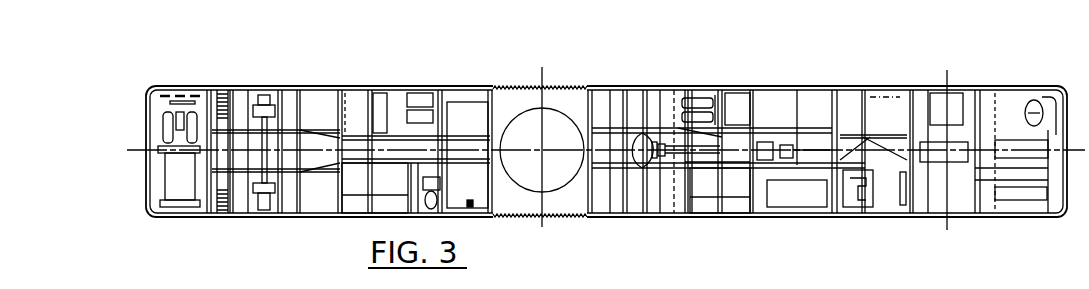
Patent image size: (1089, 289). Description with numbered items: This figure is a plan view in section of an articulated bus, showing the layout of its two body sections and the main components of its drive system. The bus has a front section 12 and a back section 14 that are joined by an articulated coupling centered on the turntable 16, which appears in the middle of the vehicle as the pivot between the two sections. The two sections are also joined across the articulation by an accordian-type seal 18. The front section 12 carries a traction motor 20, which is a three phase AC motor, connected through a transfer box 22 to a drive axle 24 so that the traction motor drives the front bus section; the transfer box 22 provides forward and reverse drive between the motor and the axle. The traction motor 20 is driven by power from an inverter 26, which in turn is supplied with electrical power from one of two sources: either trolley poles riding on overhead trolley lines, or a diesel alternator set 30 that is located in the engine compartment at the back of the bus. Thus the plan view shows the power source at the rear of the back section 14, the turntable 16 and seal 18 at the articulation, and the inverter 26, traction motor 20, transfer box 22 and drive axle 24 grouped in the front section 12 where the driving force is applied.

The front section 12 is at (832, 85).
The back section 14 is at (372, 87).
The turntable 16 is at (525, 127).
The accordian-type seal 18 is at (562, 87).
The traction motor 20 is at (801, 145).
The transfer box 22 is at (757, 142).
The drive axle 24 is at (642, 168).
The inverter 26 is at (815, 103).
The diesel alternator set 30 is at (161, 166).